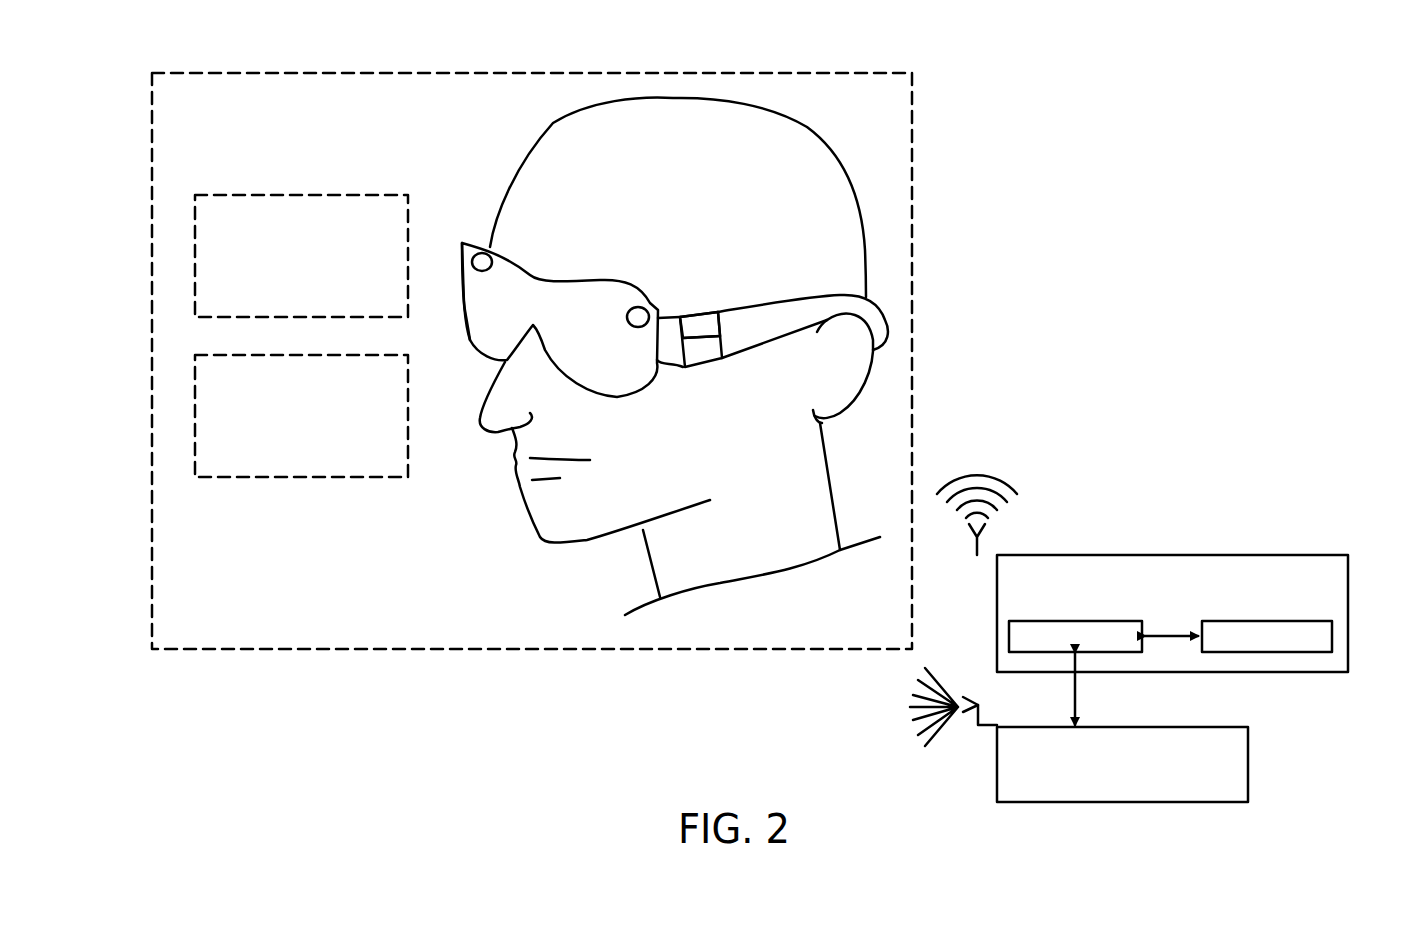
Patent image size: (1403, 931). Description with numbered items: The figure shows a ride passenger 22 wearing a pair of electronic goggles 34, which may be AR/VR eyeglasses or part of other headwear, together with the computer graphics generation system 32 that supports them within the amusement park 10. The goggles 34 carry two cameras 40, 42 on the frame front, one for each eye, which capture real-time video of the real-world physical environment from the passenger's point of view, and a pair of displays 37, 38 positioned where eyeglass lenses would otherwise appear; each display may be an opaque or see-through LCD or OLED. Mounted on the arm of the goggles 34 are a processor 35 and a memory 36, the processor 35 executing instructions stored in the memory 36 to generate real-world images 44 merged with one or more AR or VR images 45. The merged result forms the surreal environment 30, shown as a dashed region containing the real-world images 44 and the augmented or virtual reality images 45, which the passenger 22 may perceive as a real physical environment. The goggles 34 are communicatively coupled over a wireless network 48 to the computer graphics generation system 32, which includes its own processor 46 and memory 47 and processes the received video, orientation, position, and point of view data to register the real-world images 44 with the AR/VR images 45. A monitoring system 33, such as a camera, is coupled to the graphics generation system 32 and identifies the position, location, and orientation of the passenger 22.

The amusement park 10 is at (1204, 66).
The ride passenger 22 is at (848, 170).
The surreal environment 30 is at (913, 142).
The computer graphics generation system 32 is at (1172, 555).
The monitoring system 33 is at (1248, 762).
The electronic goggles 34 is at (465, 188).
The processor 35 is at (718, 315).
The memory 36 is at (722, 341).
The display 37 is at (488, 311).
The display 38 is at (597, 360).
The camera 40 is at (645, 307).
The camera 42 is at (482, 252).
The real-world images 44 is at (300, 195).
The AR or VR images 45 is at (300, 478).
The processor 46 is at (1009, 636).
The memory 47 is at (1332, 636).
The wireless network 48 is at (1088, 470).